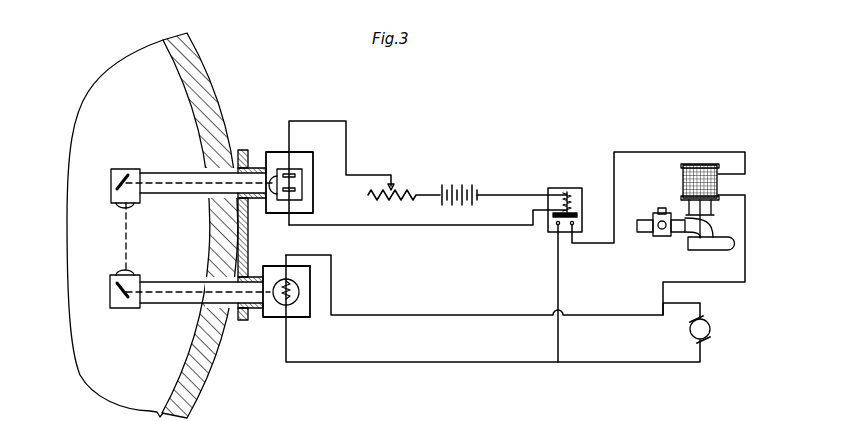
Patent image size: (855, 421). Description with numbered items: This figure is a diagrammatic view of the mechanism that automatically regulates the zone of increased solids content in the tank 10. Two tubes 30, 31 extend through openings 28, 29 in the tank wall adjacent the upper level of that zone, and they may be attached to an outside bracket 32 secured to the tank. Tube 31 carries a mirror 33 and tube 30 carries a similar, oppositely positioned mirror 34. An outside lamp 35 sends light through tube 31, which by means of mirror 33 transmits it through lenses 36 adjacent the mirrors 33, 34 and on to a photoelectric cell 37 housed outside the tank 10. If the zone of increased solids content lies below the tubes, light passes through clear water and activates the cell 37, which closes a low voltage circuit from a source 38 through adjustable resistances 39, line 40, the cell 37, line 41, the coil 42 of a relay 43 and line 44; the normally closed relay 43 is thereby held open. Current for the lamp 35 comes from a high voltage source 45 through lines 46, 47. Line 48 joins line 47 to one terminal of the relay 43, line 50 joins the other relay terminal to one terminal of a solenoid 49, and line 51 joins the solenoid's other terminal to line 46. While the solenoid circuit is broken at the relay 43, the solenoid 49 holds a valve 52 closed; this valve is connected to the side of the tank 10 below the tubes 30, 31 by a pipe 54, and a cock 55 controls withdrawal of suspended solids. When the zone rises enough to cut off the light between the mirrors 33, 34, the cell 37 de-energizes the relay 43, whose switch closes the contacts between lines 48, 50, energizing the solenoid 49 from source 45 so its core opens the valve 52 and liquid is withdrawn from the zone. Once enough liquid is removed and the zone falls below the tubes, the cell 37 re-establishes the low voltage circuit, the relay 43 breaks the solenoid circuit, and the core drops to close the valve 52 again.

The tank 10 is at (196, 48).
The opening 28 is at (222, 165).
The opening 29 is at (225, 328).
The tube 30 is at (170, 173).
The tube 31 is at (172, 304).
The outside bracket 32 is at (250, 242).
The mirror 33 is at (112, 300).
The mirror 34 is at (114, 187).
The lamp 35 is at (299, 292).
The lenses 36 is at (122, 270).
The photoelectric cell 37 is at (302, 189).
The source of low voltage energy 38 is at (459, 184).
The adjustable resistances 39 is at (393, 190).
The line 40 is at (316, 121).
The line 41 is at (424, 226).
The coil 42 is at (570, 190).
The relay 43 is at (548, 232).
The line 44 is at (510, 195).
The high voltage source 45 is at (712, 329).
The line 46 is at (498, 315).
The line 47 is at (510, 362).
The line 48 is at (558, 282).
The solenoid 49 is at (683, 182).
The line 50 is at (658, 152).
The line 51 is at (746, 239).
The valve 52 is at (704, 250).
The pipe 54 is at (643, 220).
The cock 55 is at (660, 238).